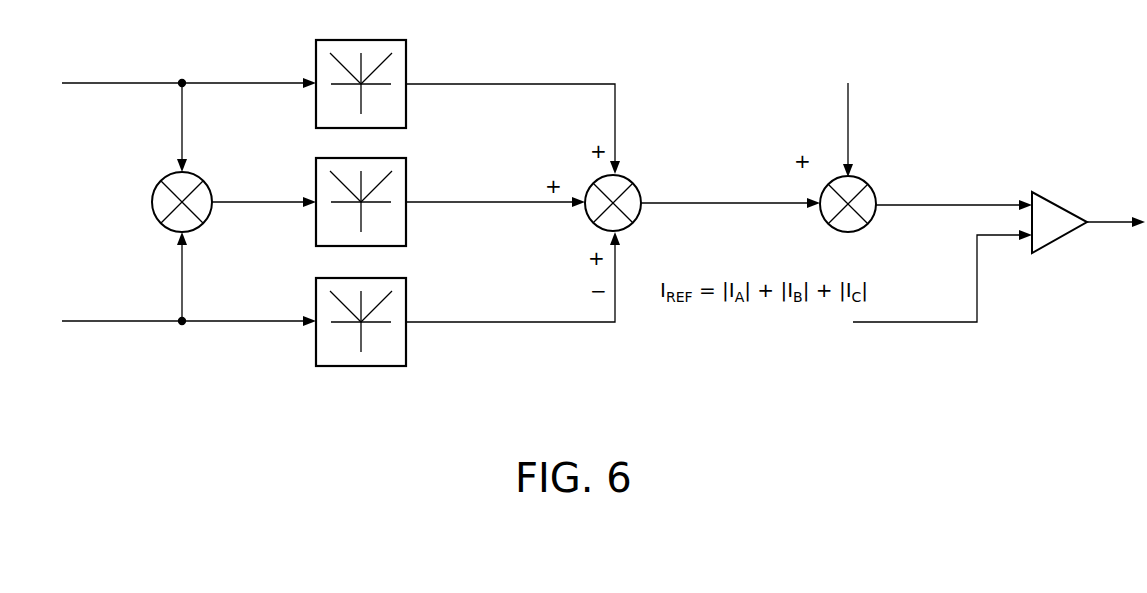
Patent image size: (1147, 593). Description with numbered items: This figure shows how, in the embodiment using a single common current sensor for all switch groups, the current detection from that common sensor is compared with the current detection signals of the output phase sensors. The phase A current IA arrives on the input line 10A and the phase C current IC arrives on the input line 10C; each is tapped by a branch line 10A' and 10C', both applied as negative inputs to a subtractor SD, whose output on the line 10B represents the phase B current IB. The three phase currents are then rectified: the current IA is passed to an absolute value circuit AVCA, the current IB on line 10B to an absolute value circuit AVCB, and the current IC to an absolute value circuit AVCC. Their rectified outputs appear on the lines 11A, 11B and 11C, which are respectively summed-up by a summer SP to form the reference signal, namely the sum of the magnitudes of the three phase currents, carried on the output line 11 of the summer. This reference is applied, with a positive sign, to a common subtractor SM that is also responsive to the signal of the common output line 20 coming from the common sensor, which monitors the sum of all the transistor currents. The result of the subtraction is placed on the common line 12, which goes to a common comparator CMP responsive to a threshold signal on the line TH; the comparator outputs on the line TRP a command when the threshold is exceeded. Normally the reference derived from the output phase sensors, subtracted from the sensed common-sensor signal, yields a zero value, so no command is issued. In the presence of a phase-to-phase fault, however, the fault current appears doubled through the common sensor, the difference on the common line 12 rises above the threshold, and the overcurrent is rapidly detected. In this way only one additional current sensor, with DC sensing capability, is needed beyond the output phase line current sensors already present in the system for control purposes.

The phase A current input line 10A is at (189, 100).
The phase A current branch line 10A' is at (143, 127).
The phase B current line 10B is at (232, 202).
The phase C current input line 10C is at (189, 336).
The phase C current branch line 10C' is at (143, 276).
The rectified phase A current line 11A is at (437, 84).
The rectified phase B current line 11B is at (445, 202).
The rectified phase C current line 11C is at (437, 322).
The summer output line 11 is at (740, 203).
The common line 12 is at (948, 205).
The common sensor output line 20 is at (848, 128).
The subtractor SD is at (152, 202).
The summer SP is at (634, 222).
The common subtractor SM is at (868, 224).
The common comparator CMP is at (1038, 250).
The trip output line TRP is at (1103, 224).
The threshold signal line TH is at (893, 322).
The absolute value circuit A AVCA is at (325, 84).
The absolute value circuit B AVCB is at (325, 196).
The absolute value circuit C AVCC is at (325, 316).
The phase A current IA is at (36, 83).
The phase B current IB is at (240, 184).
The phase C current IC is at (36, 322).